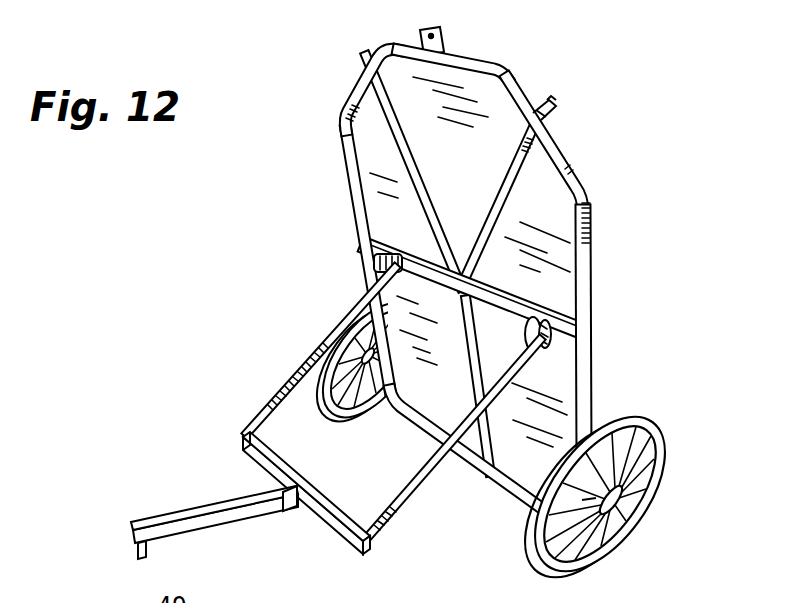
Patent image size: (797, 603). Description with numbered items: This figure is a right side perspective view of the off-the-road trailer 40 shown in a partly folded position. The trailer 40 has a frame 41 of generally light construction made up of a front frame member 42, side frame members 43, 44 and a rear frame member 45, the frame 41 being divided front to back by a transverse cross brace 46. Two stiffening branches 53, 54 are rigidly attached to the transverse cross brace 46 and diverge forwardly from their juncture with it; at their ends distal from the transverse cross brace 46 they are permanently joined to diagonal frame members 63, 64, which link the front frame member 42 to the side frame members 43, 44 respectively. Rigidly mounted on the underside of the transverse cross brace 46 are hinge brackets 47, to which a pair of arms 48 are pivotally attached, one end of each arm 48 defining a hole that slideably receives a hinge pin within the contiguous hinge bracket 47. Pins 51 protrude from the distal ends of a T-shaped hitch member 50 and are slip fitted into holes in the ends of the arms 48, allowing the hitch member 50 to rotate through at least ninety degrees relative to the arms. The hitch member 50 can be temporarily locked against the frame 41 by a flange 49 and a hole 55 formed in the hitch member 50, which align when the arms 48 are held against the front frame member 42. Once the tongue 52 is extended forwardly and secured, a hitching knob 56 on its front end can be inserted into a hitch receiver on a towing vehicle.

The trailer 40 is at (617, 107).
The frame 41 is at (321, 116).
The front frame member 42 is at (395, 36).
The side frame member 43 is at (340, 159).
The side frame member 44 is at (593, 270).
The rear frame member 45 is at (503, 490).
The transverse cross brace 46 is at (493, 304).
The hinge bracket 47 is at (370, 262).
The arm 48 is at (305, 358).
The flange 49 is at (445, 33).
The T-shaped hitch member 50 is at (250, 537).
The pin 51 is at (372, 548).
The tongue 52 is at (200, 513).
The branch 53 is at (411, 160).
The branch 54 is at (488, 211).
The hole 55 is at (298, 478).
The hitching knob 56 is at (134, 553).
The diagonal frame member 63 is at (357, 67).
The diagonal frame member 64 is at (563, 154).